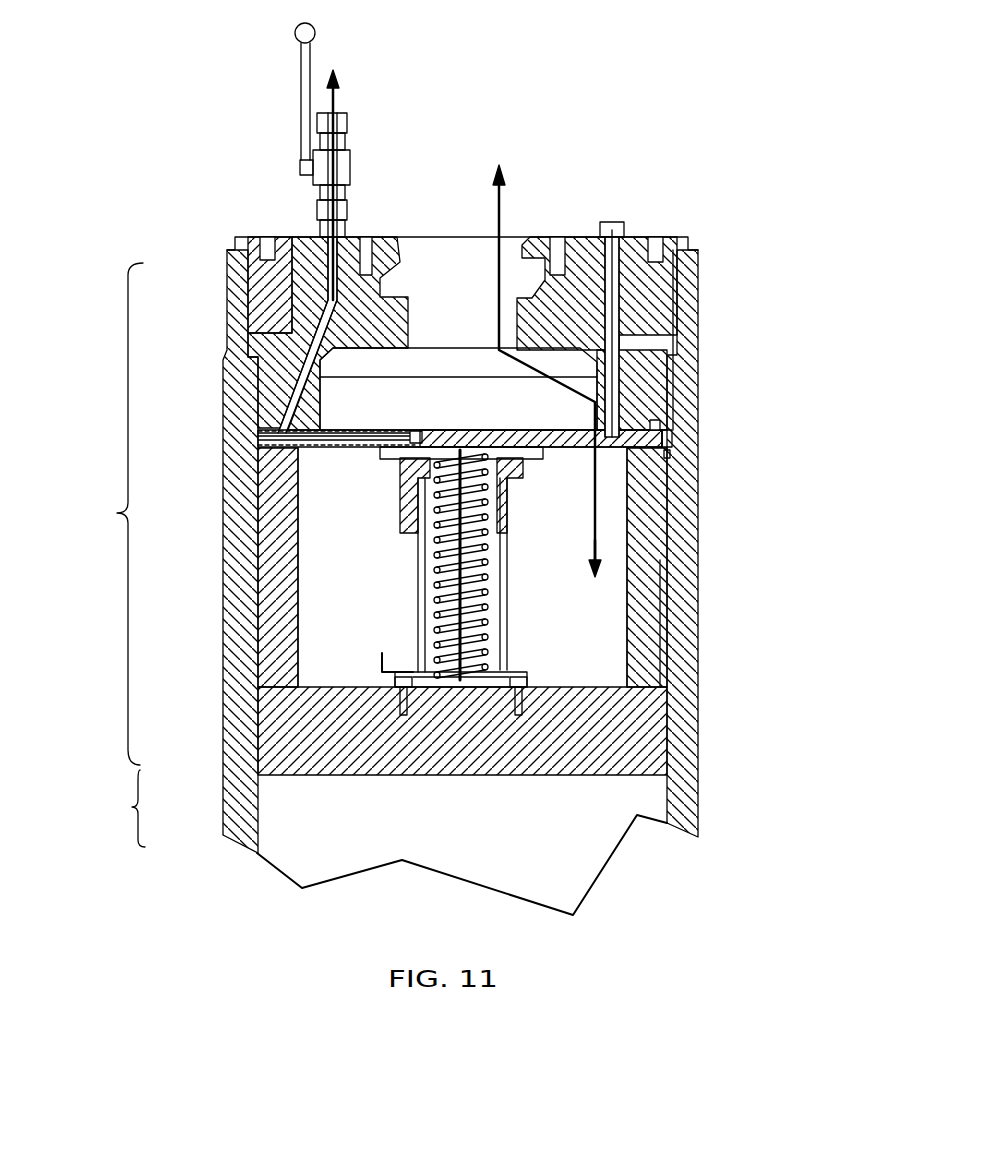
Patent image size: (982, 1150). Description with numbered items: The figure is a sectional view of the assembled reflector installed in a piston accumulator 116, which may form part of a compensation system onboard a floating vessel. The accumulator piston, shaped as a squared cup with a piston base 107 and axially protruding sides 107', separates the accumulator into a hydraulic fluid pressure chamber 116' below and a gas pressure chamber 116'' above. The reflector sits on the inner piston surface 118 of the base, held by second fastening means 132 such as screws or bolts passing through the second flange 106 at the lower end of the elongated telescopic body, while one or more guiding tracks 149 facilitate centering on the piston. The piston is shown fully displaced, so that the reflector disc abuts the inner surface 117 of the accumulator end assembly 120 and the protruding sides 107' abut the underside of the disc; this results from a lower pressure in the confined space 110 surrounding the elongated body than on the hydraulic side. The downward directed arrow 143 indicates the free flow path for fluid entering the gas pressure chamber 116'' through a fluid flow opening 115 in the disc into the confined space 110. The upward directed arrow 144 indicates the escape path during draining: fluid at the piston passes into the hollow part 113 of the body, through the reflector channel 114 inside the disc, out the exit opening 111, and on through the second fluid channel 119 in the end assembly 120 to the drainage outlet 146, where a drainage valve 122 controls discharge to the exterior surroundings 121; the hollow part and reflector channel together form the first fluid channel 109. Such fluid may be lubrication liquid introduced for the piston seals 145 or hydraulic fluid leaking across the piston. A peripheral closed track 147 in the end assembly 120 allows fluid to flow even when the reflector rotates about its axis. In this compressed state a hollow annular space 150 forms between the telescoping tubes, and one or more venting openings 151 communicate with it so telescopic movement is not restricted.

The second flange 106 is at (530, 684).
The piston base 107 is at (498, 582).
The axial protruding side 107' is at (464, 567).
The first fluid channel 109 is at (455, 596).
The confined space 110 is at (372, 578).
The exit opening 111 is at (262, 422).
The hollow part 113 is at (505, 580).
The reflector channel 114 is at (392, 412).
The fluid flow opening 115 is at (480, 438).
The piston accumulator 116 is at (404, 200).
The hydraulic fluid pressure chamber 116' is at (97, 808).
The gas pressure chamber 116'' is at (85, 514).
The inner surface 117 is at (628, 416).
The inner piston surface 118 is at (600, 687).
The second fluid channel 119 is at (288, 397).
The accumulator end assembly 120 is at (590, 283).
The exterior surroundings 121 is at (390, 43).
The drainage valve 122 is at (350, 166).
The second fastening means 132 is at (523, 677).
The downward directed arrow 143 is at (503, 208).
The upward directed arrow 144 is at (336, 97).
The piston seal 145 is at (673, 462).
The drainage outlet 146 is at (350, 236).
The peripheral closed track 147 is at (655, 425).
The guiding track 149 is at (503, 690).
The hollow annular space 150 is at (415, 615).
The venting opening 151 is at (402, 480).